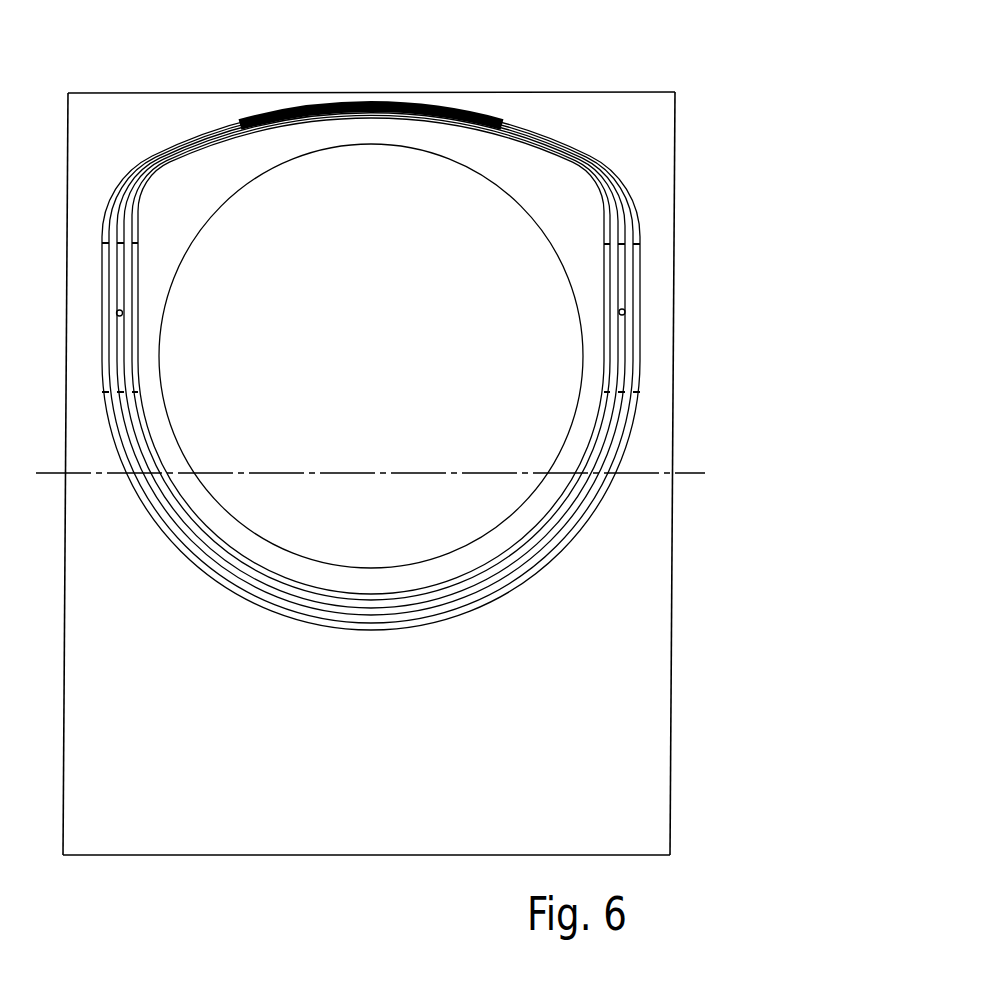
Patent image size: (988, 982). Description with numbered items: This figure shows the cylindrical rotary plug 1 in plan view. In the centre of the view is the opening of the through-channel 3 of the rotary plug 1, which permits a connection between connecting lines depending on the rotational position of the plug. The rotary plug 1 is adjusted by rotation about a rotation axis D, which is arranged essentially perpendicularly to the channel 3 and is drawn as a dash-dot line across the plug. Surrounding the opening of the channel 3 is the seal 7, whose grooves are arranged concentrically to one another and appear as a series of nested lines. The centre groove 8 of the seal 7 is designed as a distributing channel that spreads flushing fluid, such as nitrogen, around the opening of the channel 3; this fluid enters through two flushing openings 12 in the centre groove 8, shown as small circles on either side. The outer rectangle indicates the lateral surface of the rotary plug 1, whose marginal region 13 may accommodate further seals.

The rotary plug 1 is at (357, 84).
The channel 3 is at (368, 367).
The seal 7 is at (546, 578).
The centre groove 8 is at (380, 642).
The flushing openings 12 is at (142, 309).
The marginal region 13 is at (69, 90).
The rotation axis D is at (52, 474).